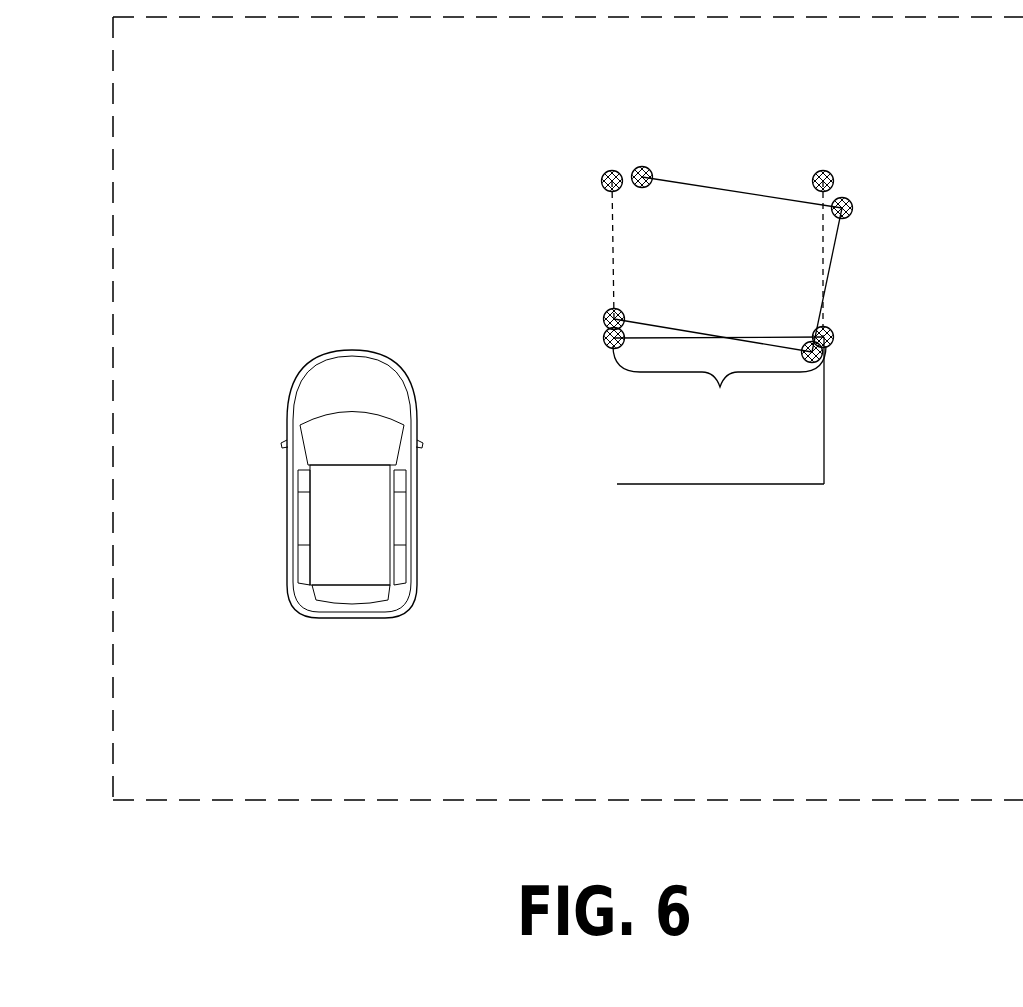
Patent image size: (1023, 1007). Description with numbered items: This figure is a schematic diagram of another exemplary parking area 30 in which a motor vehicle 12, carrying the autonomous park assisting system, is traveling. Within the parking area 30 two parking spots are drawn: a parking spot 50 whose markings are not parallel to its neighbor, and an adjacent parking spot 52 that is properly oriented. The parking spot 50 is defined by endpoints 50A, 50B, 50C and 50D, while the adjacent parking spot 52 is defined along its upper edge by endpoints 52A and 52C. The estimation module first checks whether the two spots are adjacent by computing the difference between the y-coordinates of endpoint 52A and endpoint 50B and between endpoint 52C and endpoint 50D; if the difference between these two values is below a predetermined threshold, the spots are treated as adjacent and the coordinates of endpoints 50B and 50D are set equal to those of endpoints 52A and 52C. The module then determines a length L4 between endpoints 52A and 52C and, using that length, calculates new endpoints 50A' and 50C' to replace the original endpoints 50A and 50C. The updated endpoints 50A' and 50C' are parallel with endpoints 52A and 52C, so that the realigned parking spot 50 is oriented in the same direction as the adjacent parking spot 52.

The motor vehicle 12 is at (346, 378).
The parking area 30 is at (618, 630).
The parking spot 50 is at (731, 273).
The endpoint 50A is at (668, 150).
The new endpoint 50A' is at (588, 152).
The endpoint 50B is at (606, 312).
The endpoint 50C is at (884, 179).
The new endpoint 50C' is at (845, 152).
The endpoint 50D is at (820, 359).
The parking spot 52 is at (738, 461).
The endpoint 52A is at (606, 341).
The endpoint 52C is at (833, 335).
The length L4 is at (719, 383).